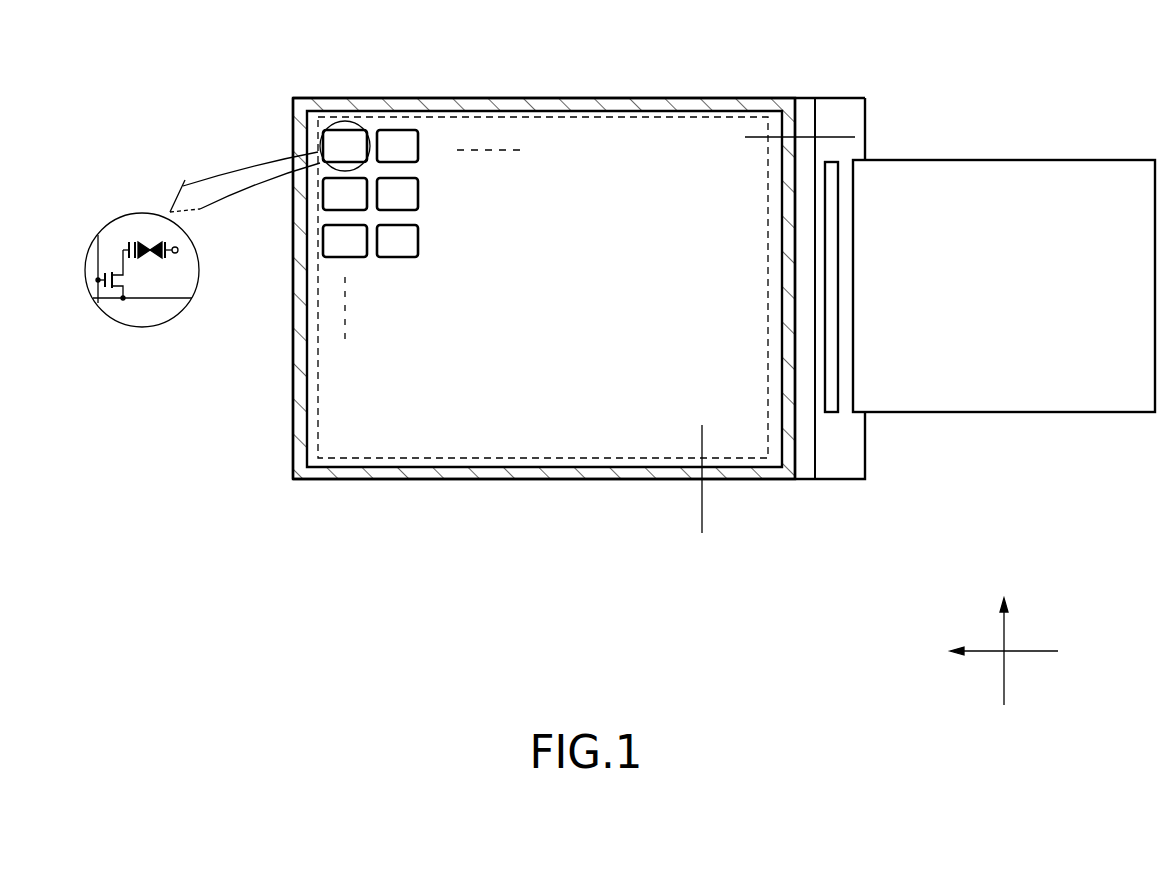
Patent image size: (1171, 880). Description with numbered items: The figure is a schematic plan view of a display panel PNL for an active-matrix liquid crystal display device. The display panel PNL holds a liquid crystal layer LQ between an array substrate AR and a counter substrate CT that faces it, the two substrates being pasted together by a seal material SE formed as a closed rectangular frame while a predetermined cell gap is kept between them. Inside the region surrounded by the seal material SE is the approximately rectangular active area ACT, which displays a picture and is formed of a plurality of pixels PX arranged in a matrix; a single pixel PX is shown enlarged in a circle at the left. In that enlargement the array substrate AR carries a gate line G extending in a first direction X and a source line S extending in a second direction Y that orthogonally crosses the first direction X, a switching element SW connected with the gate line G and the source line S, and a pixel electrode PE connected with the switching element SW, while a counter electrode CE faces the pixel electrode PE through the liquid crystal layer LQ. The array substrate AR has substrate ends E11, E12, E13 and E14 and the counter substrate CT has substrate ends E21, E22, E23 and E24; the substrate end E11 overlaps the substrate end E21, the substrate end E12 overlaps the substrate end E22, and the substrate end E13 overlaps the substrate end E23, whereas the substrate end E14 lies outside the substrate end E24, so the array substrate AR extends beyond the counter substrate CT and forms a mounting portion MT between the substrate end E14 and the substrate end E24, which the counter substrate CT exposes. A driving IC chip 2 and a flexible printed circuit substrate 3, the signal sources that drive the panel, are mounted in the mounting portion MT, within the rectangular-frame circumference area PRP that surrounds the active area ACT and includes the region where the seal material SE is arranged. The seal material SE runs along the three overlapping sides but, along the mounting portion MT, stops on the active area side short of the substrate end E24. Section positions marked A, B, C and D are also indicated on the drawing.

The pixel PX is at (345, 121).
The pixel electrode PE is at (130, 243).
The liquid crystal layer LQ is at (148, 243).
The counter electrode CE is at (178, 250).
The switching element SW is at (136, 278).
The gate line G is at (97, 252).
The source line S is at (155, 300).
The substrate end E11 is at (544, 59).
The substrate end E21 is at (466, 90).
The substrate end E12 is at (223, 288).
The substrate end E22 is at (284, 403).
The substrate end E13 is at (544, 519).
The substrate end E23 is at (467, 494).
The substrate end E14 is at (874, 106).
The substrate end E24 is at (829, 104).
The seal material SE is at (613, 97).
The circumference area PRP is at (800, 90).
The active area ACT is at (636, 470).
The counter substrate CT is at (808, 470).
The display panel PNL is at (838, 494).
The mounting portion MT is at (852, 426).
The array substrate AR is at (855, 465).
The driving IC chip 2 is at (830, 159).
The flexible printed circuit substrate 3 is at (1015, 160).
The section line A is at (710, 520).
The section line B is at (710, 432).
The section line C is at (753, 126).
The section line D is at (851, 126).
The first direction X is at (1004, 638).
The second direction Y is at (994, 652).